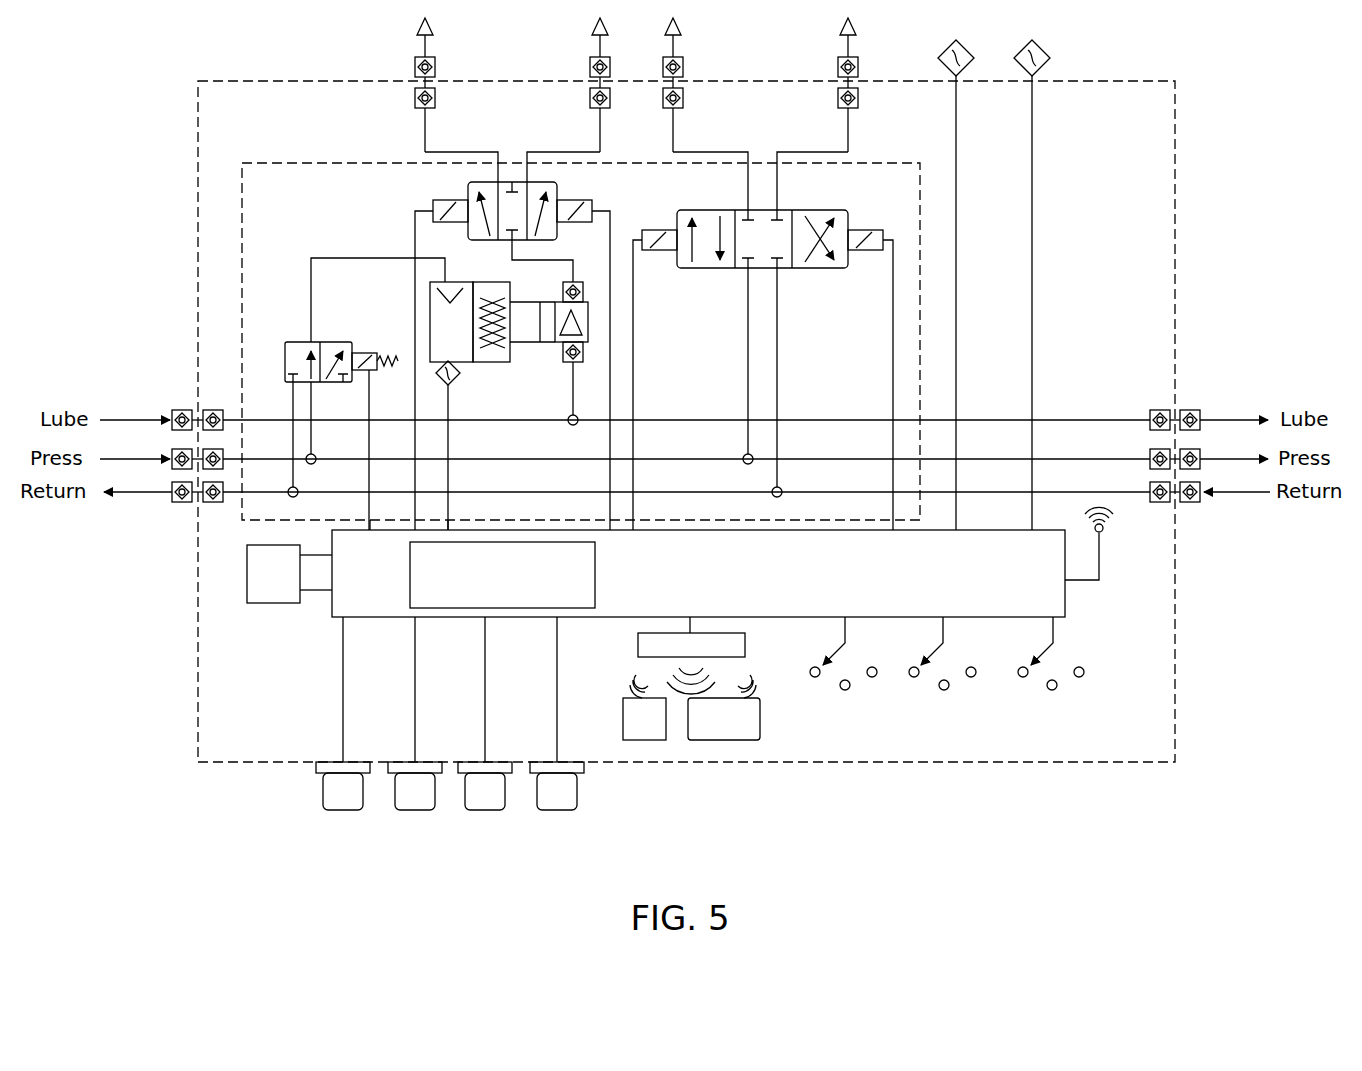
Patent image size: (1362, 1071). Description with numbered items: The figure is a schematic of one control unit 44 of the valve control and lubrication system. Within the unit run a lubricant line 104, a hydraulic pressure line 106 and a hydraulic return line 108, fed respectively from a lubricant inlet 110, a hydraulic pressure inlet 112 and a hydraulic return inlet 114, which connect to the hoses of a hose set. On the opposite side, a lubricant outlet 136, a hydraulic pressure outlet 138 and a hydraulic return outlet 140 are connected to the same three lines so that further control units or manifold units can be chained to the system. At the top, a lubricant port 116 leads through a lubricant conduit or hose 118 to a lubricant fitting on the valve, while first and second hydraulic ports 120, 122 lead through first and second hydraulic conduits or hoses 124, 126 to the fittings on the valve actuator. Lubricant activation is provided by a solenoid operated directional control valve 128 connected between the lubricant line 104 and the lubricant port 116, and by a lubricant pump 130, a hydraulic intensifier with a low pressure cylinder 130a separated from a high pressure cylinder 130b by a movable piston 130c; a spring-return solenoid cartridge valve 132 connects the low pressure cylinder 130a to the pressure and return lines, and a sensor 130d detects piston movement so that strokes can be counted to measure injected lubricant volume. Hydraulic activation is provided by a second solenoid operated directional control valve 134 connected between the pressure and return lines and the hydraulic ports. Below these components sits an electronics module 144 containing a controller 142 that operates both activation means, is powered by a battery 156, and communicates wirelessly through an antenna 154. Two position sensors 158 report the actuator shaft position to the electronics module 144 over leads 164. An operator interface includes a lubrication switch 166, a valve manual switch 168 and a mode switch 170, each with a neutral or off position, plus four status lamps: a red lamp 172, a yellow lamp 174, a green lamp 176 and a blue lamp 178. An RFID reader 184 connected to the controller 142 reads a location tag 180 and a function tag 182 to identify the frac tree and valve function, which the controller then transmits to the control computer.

The control unit 44 is at (215, 80).
The lubricant line 104 is at (262, 418).
The hydraulic pressure line 106 is at (658, 457).
The hydraulic return line 108 is at (520, 490).
The lubricant inlet 110 is at (213, 410).
The hydraulic pressure inlet 112 is at (220, 470).
The hydraulic return inlet 114 is at (212, 503).
The lubricant port 116 is at (414, 97).
The lubricant conduit or hose 118 is at (418, 45).
The first hydraulic port 120 is at (684, 97).
The second hydraulic port 122 is at (838, 97).
The first hydraulic conduit or hose 124 is at (684, 45).
The second hydraulic conduit or hose 126 is at (838, 45).
The valve 128 is at (469, 200).
The lubricant pump 130 is at (532, 398).
The low pressure cylinder 130a is at (440, 337).
The high pressure cylinder 130b is at (576, 330).
The movable piston 130c is at (525, 318).
The sensor 130d is at (458, 380).
The valve 132 is at (330, 340).
The valve 134 is at (728, 270).
The lubricant outlet 136 is at (1162, 408).
The hydraulic pressure outlet 138 is at (1152, 450).
The hydraulic return outlet 140 is at (1160, 503).
The controller 142 is at (465, 585).
The electronics module 144 is at (864, 585).
The antenna 154 is at (1101, 565).
The battery 156 is at (278, 605).
The position sensors 158 is at (968, 46).
The leads 164 is at (957, 195).
The lubrication switch 166 is at (846, 736).
The valve manual switch 168 is at (1058, 736).
The mode switch 170 is at (947, 736).
The red lamp 172 is at (320, 793).
The yellow lamp 174 is at (393, 793).
The green lamp 176 is at (505, 791).
The blue lamp 178 is at (577, 791).
The location tag 180 is at (666, 744).
The function tag 182 is at (760, 718).
The RFID reader 184 is at (636, 645).